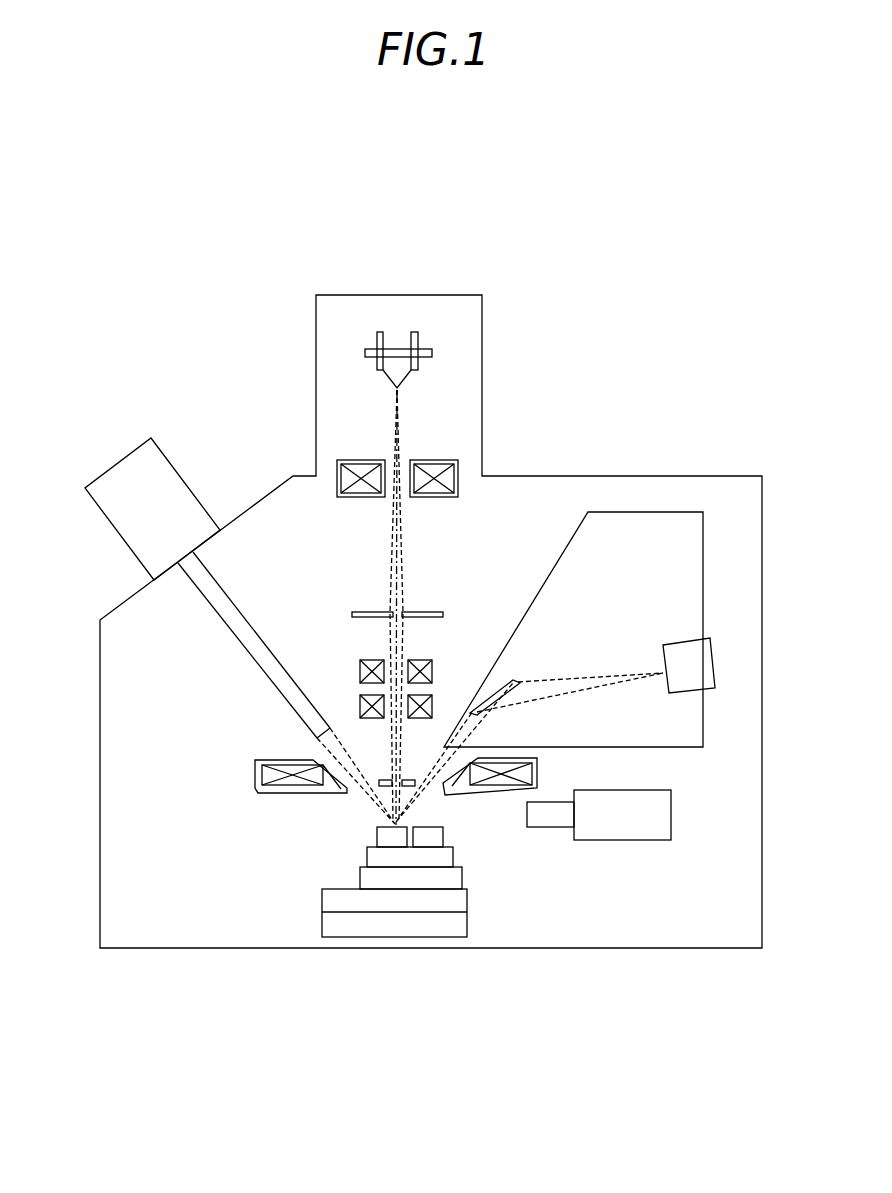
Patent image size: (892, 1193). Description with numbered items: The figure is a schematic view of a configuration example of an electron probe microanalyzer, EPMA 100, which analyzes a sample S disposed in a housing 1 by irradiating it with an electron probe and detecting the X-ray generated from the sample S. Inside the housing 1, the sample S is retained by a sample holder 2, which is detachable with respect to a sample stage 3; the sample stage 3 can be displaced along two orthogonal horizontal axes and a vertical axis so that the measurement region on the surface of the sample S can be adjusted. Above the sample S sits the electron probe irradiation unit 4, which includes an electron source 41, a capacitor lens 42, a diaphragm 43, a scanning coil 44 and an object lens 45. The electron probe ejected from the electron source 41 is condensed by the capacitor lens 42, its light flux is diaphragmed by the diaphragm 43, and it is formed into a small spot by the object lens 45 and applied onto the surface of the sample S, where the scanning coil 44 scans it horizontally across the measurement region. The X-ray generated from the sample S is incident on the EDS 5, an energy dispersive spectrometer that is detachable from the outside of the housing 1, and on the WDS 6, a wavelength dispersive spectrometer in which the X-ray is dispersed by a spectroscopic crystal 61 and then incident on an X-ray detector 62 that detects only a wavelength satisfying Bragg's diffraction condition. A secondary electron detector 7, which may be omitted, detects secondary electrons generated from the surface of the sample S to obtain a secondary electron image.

The EPMA 100 is at (622, 312).
The housing 1 is at (598, 949).
The sample holder 2 is at (453, 857).
The sample stage 3 is at (470, 925).
The electron probe irradiation unit 4 is at (445, 406).
The electron source 41 is at (398, 355).
The capacitor lens 42 is at (440, 497).
The diaphragm 43 is at (358, 610).
The scanning coil 44 is at (362, 668).
The object lens 45 is at (262, 775).
The EDS 5 is at (118, 462).
The WDS 6 is at (660, 511).
The spectroscopic crystal 61 is at (513, 684).
The X-ray detector 62 is at (672, 640).
The secondary electron detector 7 is at (640, 841).
The sample S is at (377, 836).